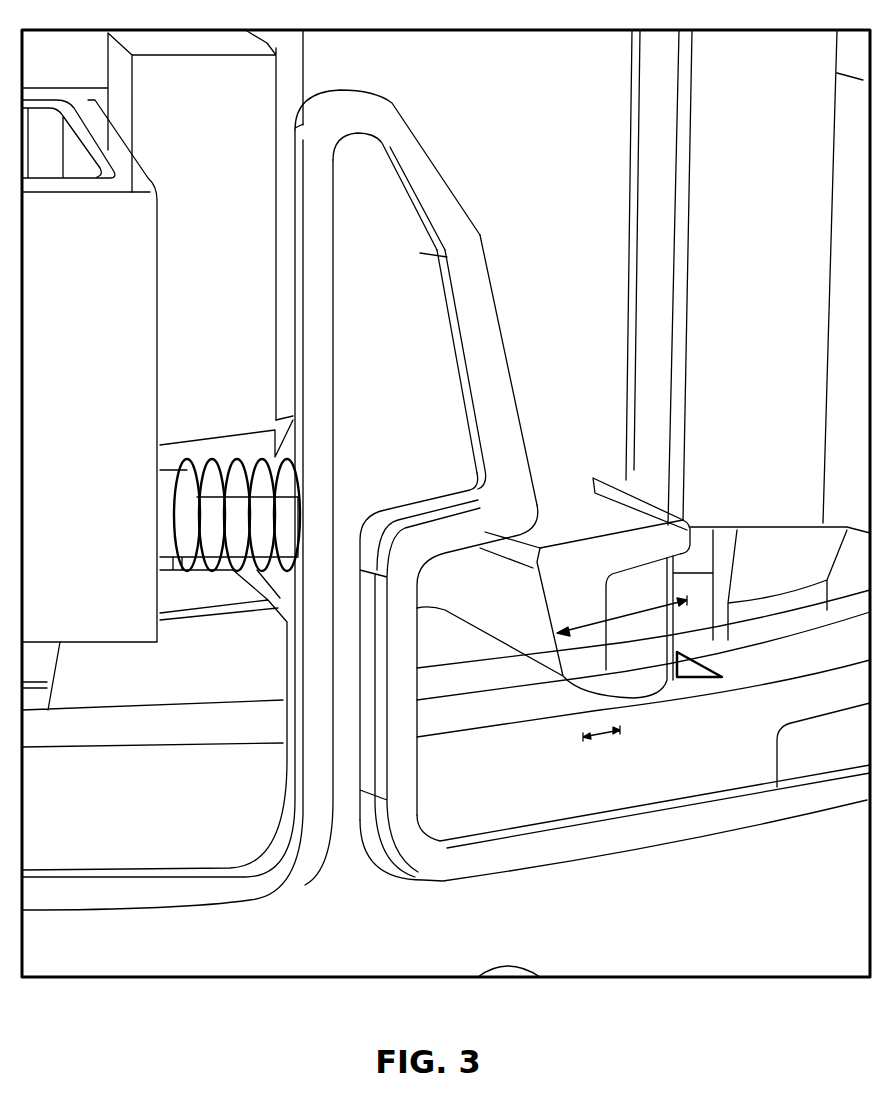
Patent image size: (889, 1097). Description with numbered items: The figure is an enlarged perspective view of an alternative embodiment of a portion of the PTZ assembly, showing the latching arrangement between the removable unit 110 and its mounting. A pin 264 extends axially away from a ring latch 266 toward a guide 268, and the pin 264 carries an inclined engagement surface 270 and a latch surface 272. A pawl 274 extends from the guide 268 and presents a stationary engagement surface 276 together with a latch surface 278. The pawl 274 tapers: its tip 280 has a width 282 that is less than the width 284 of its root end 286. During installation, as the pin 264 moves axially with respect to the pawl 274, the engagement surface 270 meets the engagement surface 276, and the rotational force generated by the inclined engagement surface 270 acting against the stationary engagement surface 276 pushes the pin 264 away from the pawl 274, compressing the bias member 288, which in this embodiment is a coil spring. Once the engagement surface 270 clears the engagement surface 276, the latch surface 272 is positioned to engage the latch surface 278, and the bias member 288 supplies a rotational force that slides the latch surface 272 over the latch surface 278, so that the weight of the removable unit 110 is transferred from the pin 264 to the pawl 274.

The removable unit 110 is at (437, 951).
The pin 264 is at (398, 133).
The ring latch 266 is at (667, 827).
The guide 268 is at (576, 184).
The engagement surface 270 is at (505, 320).
The latch surface 272 is at (500, 548).
The pawl 274 is at (553, 601).
The engagement surface 276 is at (540, 658).
The latch surface 278 is at (637, 527).
The tip 280 is at (587, 668).
The width 282 is at (603, 737).
The width 284 is at (653, 613).
The root end 286 is at (683, 450).
The bias member 288 is at (200, 463).